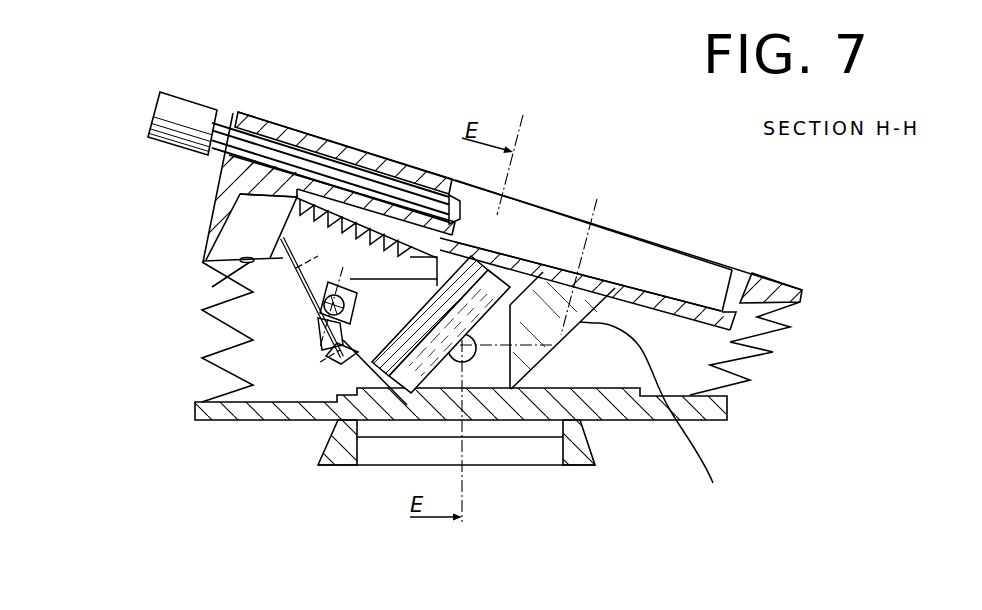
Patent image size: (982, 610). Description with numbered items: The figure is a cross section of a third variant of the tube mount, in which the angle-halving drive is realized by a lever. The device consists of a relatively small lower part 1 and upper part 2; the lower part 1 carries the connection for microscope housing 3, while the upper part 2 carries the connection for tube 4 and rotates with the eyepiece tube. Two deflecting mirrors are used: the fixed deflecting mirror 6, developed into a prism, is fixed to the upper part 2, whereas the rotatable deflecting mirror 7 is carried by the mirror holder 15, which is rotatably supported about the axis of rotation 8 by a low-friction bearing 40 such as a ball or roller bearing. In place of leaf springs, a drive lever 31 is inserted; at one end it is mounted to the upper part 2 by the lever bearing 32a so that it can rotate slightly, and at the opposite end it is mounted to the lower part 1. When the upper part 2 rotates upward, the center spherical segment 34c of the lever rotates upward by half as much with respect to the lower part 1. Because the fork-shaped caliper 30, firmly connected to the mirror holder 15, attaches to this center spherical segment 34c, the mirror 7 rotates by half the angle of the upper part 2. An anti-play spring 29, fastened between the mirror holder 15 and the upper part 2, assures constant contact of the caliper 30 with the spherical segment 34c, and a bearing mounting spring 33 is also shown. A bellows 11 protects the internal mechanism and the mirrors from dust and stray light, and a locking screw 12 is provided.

The lower part 1 is at (728, 402).
The upper part 2 is at (748, 282).
The connection for microscope housing 3 is at (590, 437).
The connection for tube 4 is at (551, 236).
The deflecting mirror, fixed 6 is at (650, 413).
The deflecting mirror, rotatable 7 is at (455, 372).
The axis of rotation 8 is at (480, 362).
The bellows 11 is at (762, 355).
The locking screw 12 is at (155, 113).
The mirror holder 15 is at (401, 408).
The anti-play spring 29 is at (305, 245).
The caliper 30 is at (357, 282).
The drive lever 31 is at (335, 422).
The lever bearing 32a is at (228, 261).
The bearing mounting spring 33 is at (325, 300).
The center spherical segment on drive lever 34c is at (335, 422).
The low-friction bearing 40 is at (511, 304).